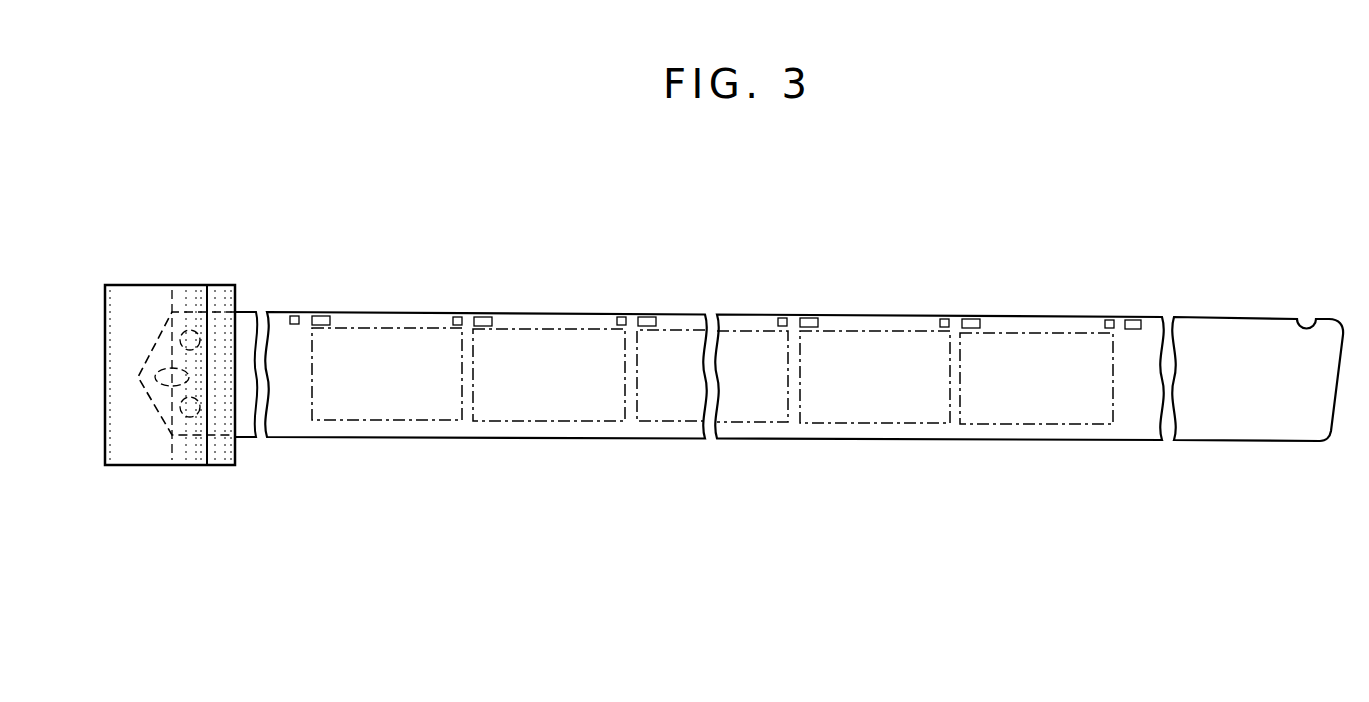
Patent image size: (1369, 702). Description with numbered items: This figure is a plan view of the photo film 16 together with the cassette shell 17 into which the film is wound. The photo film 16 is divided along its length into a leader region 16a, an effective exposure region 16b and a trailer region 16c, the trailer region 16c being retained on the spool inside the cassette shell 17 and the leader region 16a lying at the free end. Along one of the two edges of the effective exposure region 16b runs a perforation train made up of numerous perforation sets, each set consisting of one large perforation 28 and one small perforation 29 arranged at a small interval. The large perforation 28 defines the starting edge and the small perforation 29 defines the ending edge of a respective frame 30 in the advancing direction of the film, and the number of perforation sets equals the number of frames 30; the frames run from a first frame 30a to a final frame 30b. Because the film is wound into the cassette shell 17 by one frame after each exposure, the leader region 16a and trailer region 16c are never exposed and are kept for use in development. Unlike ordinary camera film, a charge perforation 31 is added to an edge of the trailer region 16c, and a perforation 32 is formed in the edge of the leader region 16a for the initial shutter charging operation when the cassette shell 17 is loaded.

The photo film 16 is at (739, 378).
The leader region 16a is at (1343, 499).
The effective exposure region 16b is at (1107, 498).
The trailer region 16c is at (303, 497).
The cassette shell 17 is at (157, 262).
The large perforation 28 is at (323, 316).
The small perforation 29 is at (622, 317).
The frame 30 is at (897, 331).
The first frame 30a is at (405, 328).
The final frame 30b is at (1063, 333).
The charge perforation 31 is at (295, 316).
The perforation 32 is at (1133, 320).